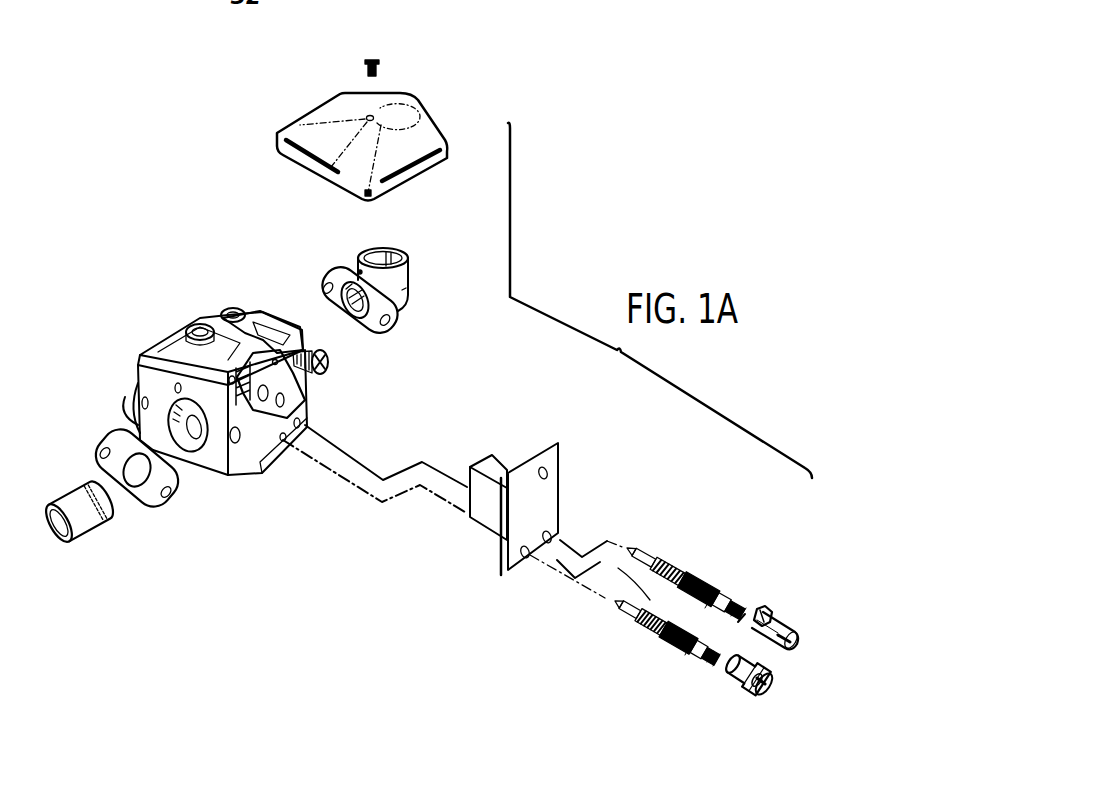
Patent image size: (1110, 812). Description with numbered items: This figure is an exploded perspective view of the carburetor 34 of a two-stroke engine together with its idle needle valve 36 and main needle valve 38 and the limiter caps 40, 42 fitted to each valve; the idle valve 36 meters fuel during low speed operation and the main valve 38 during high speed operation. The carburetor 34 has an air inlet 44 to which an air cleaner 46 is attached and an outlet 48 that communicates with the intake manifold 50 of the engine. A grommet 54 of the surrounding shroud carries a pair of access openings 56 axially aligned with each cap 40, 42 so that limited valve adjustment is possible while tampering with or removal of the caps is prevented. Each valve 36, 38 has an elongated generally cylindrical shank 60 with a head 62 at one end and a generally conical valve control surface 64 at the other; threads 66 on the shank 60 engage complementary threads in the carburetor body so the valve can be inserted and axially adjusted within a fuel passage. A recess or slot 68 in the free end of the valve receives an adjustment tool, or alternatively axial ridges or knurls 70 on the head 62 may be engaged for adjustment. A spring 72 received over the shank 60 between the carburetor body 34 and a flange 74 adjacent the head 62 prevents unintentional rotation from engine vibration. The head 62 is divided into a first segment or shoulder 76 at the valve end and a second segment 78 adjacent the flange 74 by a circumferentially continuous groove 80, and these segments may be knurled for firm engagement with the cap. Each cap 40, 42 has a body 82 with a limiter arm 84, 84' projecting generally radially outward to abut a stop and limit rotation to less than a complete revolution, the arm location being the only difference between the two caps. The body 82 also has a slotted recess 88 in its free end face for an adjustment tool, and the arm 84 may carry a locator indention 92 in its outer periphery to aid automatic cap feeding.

The carburetor 34 is at (148, 330).
The idle needle valve 36 is at (602, 642).
The main needle valve 38 is at (661, 535).
The limiter cap 40 is at (762, 705).
The limiter cap 42 is at (796, 602).
The air inlet 44 is at (408, 298).
The air cleaner 46 is at (420, 128).
The outlet 48 is at (207, 462).
The intake manifold 50 is at (98, 527).
The grommet 54 is at (557, 447).
The access openings 56 is at (555, 528).
The shank 60 is at (690, 583).
The head 62 is at (740, 597).
The conical valve control surface 64 is at (642, 553).
The threads 66 is at (616, 580).
The recess or slot 68 is at (738, 622).
The axial ridges or knurls 70 is at (724, 638).
The spring 72 is at (727, 590).
The flange 74 is at (720, 600).
The first segment or shoulder 76 is at (747, 607).
The second segment 78 is at (743, 613).
The groove 80 is at (743, 597).
The cap body 82 is at (768, 648).
The limiter arm 84 is at (757, 714).
The limiter arm 84' is at (814, 618).
The slotted recess 88 is at (762, 640).
The locator indention 92 is at (750, 684).